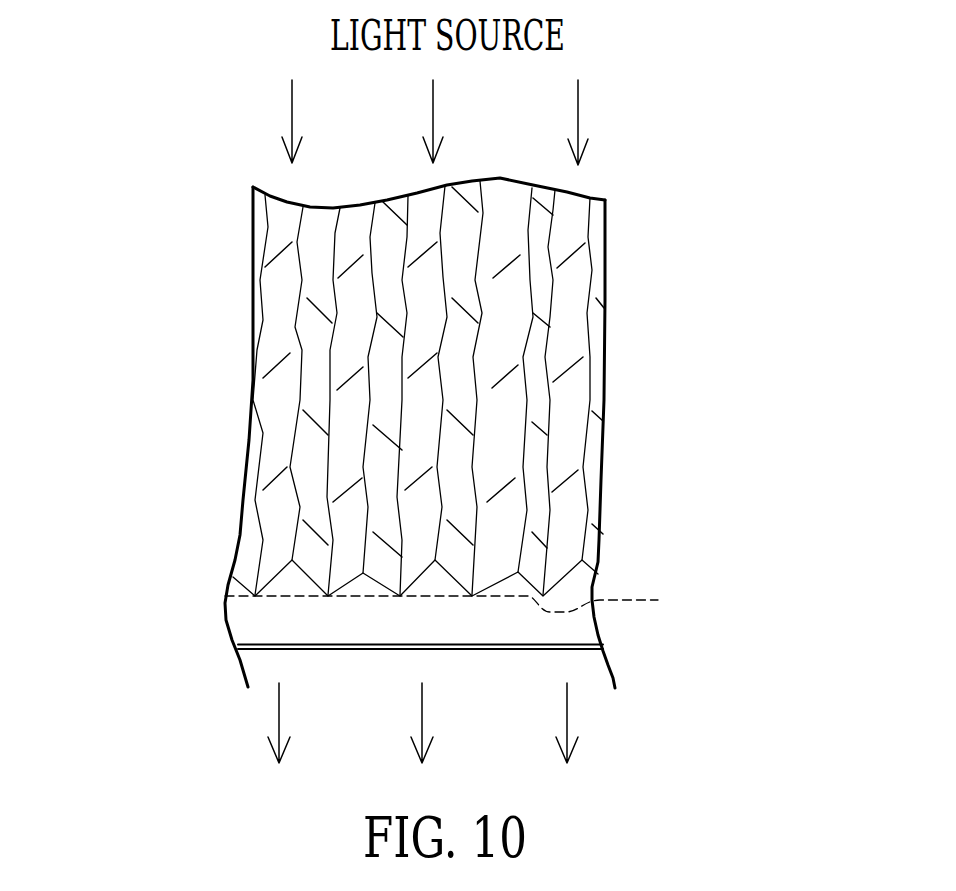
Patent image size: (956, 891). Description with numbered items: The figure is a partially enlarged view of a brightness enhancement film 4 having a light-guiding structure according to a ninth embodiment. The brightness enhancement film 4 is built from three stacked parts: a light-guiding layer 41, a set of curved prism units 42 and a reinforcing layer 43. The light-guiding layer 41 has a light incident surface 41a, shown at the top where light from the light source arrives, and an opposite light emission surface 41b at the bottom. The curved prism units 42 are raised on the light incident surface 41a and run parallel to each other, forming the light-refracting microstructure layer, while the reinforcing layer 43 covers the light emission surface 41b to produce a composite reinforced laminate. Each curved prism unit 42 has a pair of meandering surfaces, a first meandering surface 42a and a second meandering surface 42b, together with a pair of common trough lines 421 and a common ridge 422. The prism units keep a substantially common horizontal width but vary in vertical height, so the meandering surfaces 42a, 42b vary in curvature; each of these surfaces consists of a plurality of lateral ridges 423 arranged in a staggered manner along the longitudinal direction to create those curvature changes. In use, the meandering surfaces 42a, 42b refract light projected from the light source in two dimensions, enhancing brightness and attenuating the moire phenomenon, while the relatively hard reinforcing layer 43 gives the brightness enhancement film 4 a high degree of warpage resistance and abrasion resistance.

The brightness enhancement film 4 is at (195, 544).
The light-guiding layer 41 is at (543, 627).
The light incident surface 41a is at (467, 606).
The light emission surface 41b is at (550, 647).
The curved prism units 42 is at (522, 588).
The first meandering surface 42a is at (487, 463).
The second meandering surface 42b is at (531, 478).
The common trough lines 421 is at (553, 350).
The common ridge 422 is at (531, 300).
The lateral ridges 423 is at (568, 245).
The reinforcing layer 43 is at (518, 650).